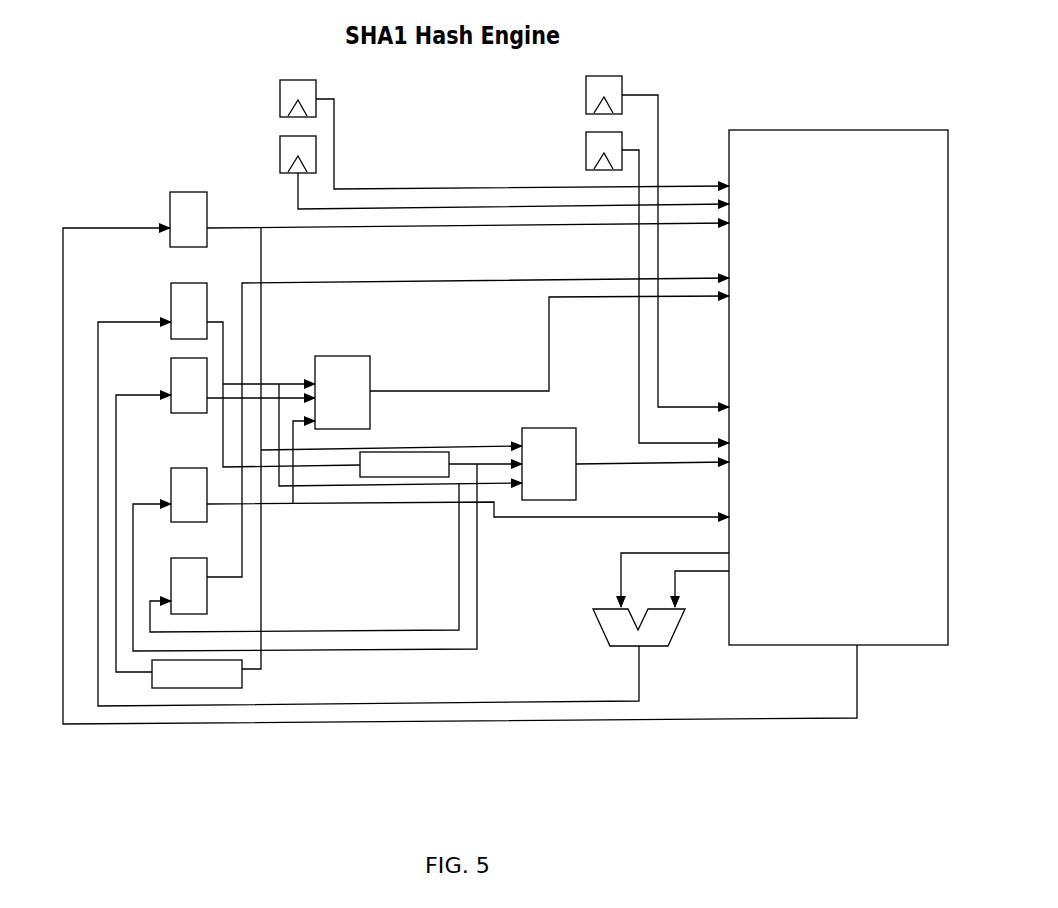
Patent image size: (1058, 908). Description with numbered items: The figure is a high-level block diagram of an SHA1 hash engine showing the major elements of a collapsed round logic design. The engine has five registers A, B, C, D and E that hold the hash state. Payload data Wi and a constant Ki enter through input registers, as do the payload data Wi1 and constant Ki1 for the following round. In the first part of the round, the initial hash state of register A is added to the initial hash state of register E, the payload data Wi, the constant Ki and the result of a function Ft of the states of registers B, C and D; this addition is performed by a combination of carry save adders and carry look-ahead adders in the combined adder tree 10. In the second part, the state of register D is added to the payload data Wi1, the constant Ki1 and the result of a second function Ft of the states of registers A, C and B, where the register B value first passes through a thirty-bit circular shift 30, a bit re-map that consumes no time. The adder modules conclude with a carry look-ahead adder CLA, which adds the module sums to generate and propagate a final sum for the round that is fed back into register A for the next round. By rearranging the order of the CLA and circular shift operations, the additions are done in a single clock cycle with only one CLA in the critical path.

The payload data Wi is at (280, 99).
The constant Ki is at (280, 155).
The payload data Wi1 is at (586, 95).
The constant Ki1 is at (586, 150).
The register A is at (188, 219).
The register B is at (189, 311).
The register C is at (189, 385).
The register D is at (189, 495).
The register E is at (189, 586).
The function F_t Ft is at (445, 428).
The 30-bit circular shift 30 is at (300, 570).
The combined adder tree 10 is at (838, 387).
The carry look-ahead adder CLA is at (639, 627).